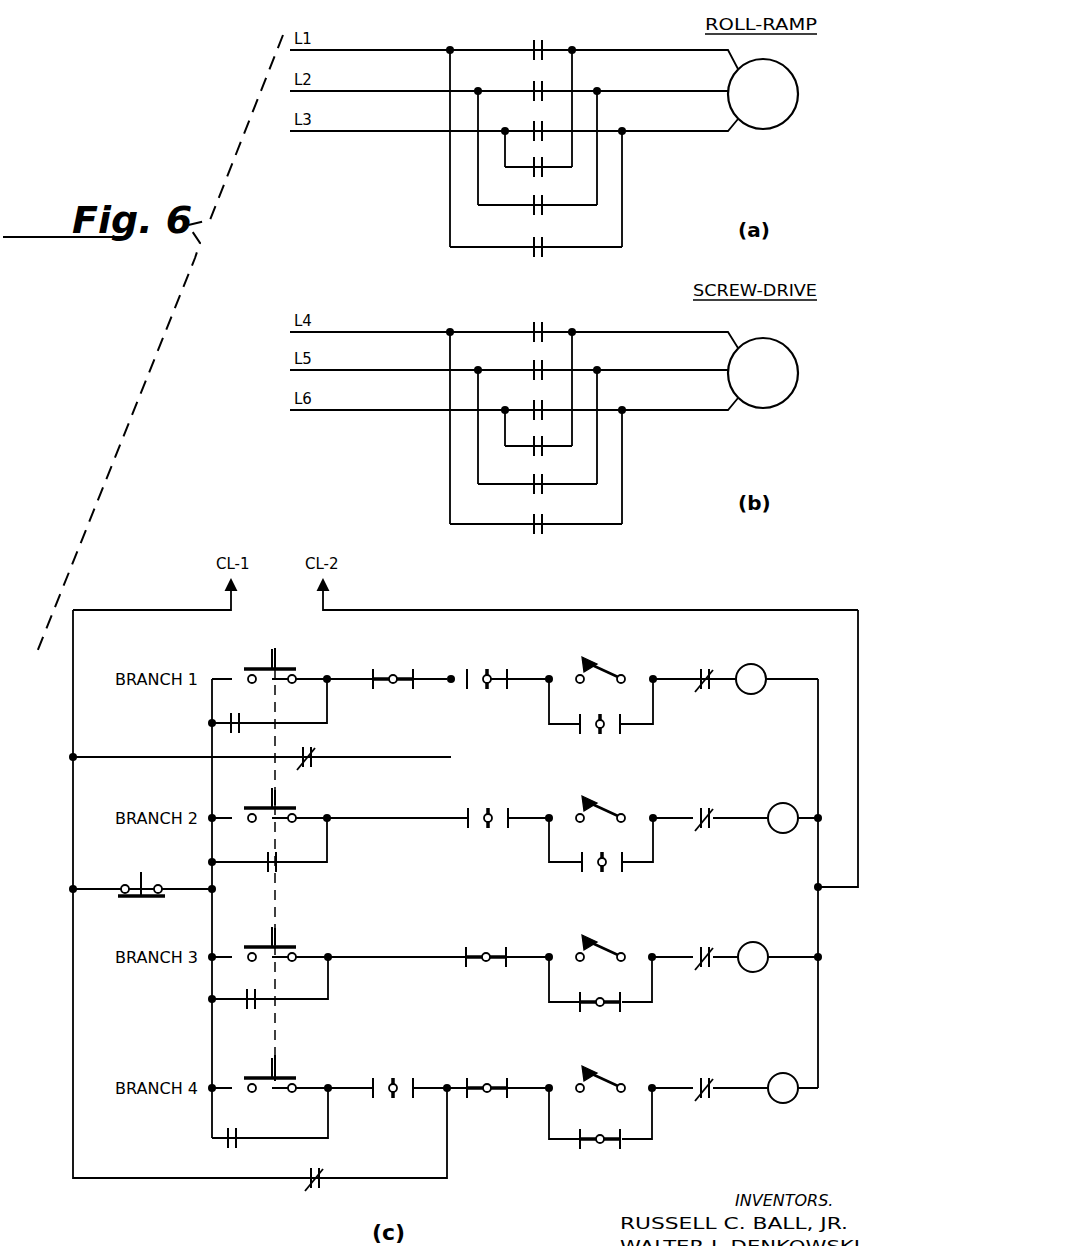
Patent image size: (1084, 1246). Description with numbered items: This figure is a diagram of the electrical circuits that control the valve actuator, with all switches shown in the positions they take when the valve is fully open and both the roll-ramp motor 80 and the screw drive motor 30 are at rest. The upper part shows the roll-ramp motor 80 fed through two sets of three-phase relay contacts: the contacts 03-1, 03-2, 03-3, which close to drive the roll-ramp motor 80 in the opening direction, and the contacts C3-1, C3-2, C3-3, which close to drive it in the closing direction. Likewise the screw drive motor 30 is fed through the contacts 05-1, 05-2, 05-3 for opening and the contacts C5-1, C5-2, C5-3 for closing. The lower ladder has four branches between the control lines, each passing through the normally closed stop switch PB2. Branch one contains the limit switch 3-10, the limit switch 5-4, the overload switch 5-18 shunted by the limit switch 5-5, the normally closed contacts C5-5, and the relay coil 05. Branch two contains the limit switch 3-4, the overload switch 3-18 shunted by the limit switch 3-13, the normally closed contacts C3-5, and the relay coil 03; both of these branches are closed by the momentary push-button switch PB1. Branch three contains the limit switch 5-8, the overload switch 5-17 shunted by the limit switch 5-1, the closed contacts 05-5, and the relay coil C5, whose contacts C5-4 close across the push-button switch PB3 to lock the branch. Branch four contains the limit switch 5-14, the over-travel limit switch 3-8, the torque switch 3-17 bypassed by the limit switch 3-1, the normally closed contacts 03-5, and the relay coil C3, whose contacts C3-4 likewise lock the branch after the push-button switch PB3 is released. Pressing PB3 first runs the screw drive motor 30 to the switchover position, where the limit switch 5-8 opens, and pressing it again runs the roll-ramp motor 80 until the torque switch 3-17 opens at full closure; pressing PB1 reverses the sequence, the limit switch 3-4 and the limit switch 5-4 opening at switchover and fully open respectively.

The roll-ramp motor 80 is at (785, 76).
The screw drive motor 30 is at (775, 352).
The relay contact 03-1 is at (517, 45).
The relay contact 03-2 is at (517, 86).
The relay contact 03-3 is at (517, 126).
The relay contact C3-1 is at (517, 172).
The relay contact C3-2 is at (514, 210).
The relay contact C3-3 is at (514, 252).
The relay contact 05-1 is at (517, 327).
The relay contact 05-2 is at (517, 365).
The relay contact 05-3 is at (517, 405).
The relay contact C5-1 is at (517, 451).
The relay contact C5-2 is at (514, 489).
The relay contact C5-3 is at (514, 529).
The push-button switch PB1 is at (270, 649).
The stop switch PB2 is at (141, 873).
The push-button switch PB3 is at (271, 927).
The limit switch 3-10 is at (396, 675).
The limit switch 5-4 is at (490, 672).
The overload switch 5-18 is at (595, 662).
The limit switch 5-5 is at (607, 735).
The relay contacts C5-5 is at (707, 685).
The relay coil 05 is at (751, 679).
The limit switch 3-4 is at (489, 810).
The overload switch 3-18 is at (600, 800).
The limit switch 3-13 is at (628, 870).
The relay contacts C3-5 is at (705, 825).
The relay coil 03 is at (783, 818).
The limit switch 5-8 is at (483, 948).
The overload switch 5-17 is at (604, 936).
The limit switch 5-1 is at (613, 1008).
The relay contacts 05-5 is at (706, 963).
The relay coil C5 is at (753, 957).
The relay contacts C5-4 is at (255, 1005).
The limit switch 5-14 is at (397, 1083).
The over-travel limit switch 3-8 is at (476, 1080).
The torque switch 3-17 is at (602, 1075).
The limit switch 3-1 is at (630, 1148).
The relay contacts 03-5 is at (706, 1094).
The relay coil C3 is at (783, 1088).
The relay contacts C3-4 is at (228, 1143).